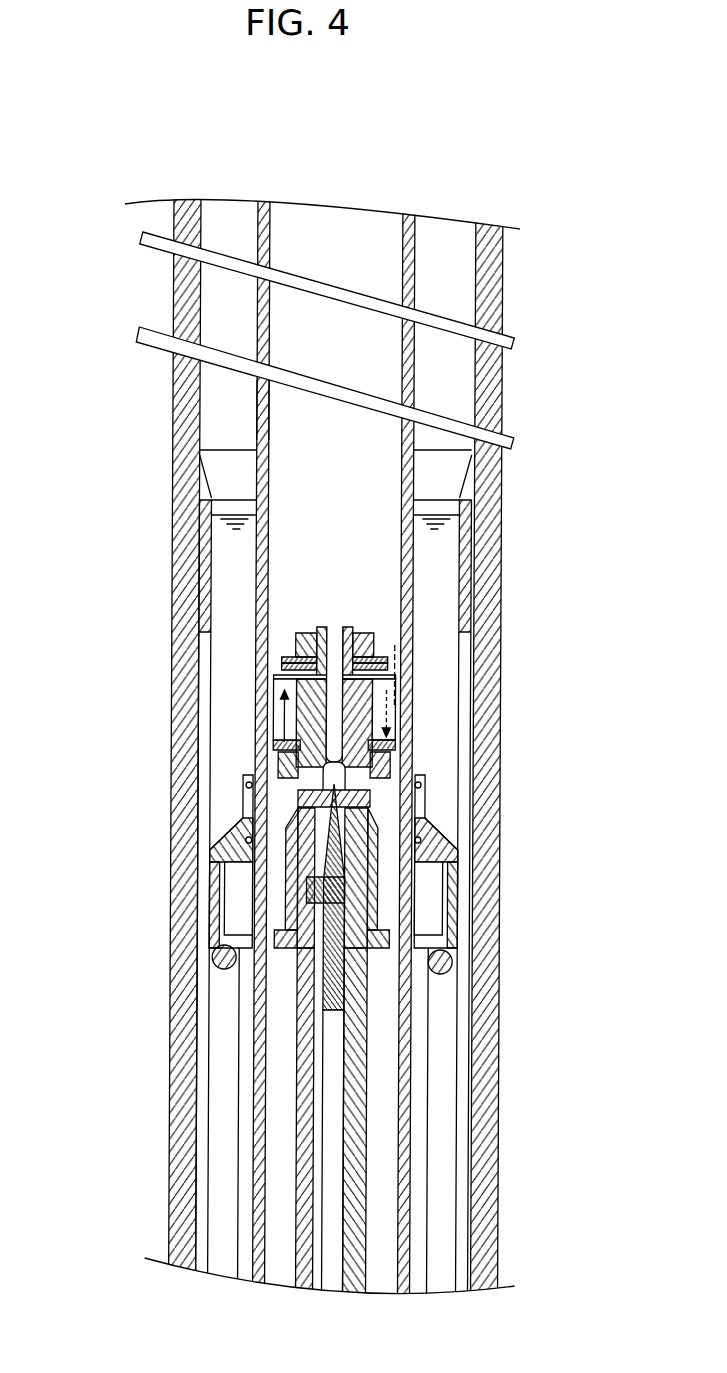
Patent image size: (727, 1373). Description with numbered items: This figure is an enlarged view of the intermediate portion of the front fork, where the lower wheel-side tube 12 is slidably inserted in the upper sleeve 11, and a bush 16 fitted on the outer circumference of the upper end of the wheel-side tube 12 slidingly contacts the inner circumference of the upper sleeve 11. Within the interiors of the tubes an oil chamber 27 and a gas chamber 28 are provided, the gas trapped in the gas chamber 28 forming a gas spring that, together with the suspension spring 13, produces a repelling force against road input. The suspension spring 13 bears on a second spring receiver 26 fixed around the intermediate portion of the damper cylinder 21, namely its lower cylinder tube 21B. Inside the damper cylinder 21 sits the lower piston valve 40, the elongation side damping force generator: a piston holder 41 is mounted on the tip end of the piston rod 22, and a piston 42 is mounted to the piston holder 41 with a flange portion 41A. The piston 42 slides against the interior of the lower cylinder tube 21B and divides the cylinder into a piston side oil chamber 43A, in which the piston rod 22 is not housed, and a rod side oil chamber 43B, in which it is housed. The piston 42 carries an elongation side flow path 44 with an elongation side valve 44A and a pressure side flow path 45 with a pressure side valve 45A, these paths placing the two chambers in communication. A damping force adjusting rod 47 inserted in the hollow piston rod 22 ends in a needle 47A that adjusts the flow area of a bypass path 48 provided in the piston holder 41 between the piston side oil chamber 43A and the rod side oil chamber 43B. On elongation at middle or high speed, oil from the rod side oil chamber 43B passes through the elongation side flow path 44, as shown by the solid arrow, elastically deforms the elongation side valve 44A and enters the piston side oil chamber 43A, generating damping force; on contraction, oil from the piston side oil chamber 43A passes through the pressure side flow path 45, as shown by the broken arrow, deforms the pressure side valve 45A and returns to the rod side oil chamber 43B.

The upper sleeve 11 is at (173, 287).
The wheel-side tube 12 is at (203, 1186).
The suspension spring 13 is at (214, 958).
The bush 16 is at (201, 530).
The damper cylinder 21 is at (258, 313).
The lower cylinder tube 21B is at (258, 408).
The piston rod 22 is at (300, 1236).
The second spring receiver 26 is at (222, 921).
The oil chamber 27 is at (226, 582).
The gas chamber 28 is at (213, 218).
The lower piston valve 40 is at (334, 691).
The piston holder 41 is at (376, 878).
The housing flange 41A is at (377, 948).
The piston 42 is at (399, 721).
The piston side oil chamber 43A is at (340, 420).
The rod side oil chamber 43B is at (382, 1079).
The elongation side flow path 44 is at (278, 713).
The elongation side valve 44A is at (281, 666).
The pressure side flow path 45 is at (391, 689).
The pressure side valve 45A is at (385, 751).
The damping force adjusting rod 47 is at (334, 1229).
The needle 47A is at (340, 811).
The bypass path 48 is at (367, 800).